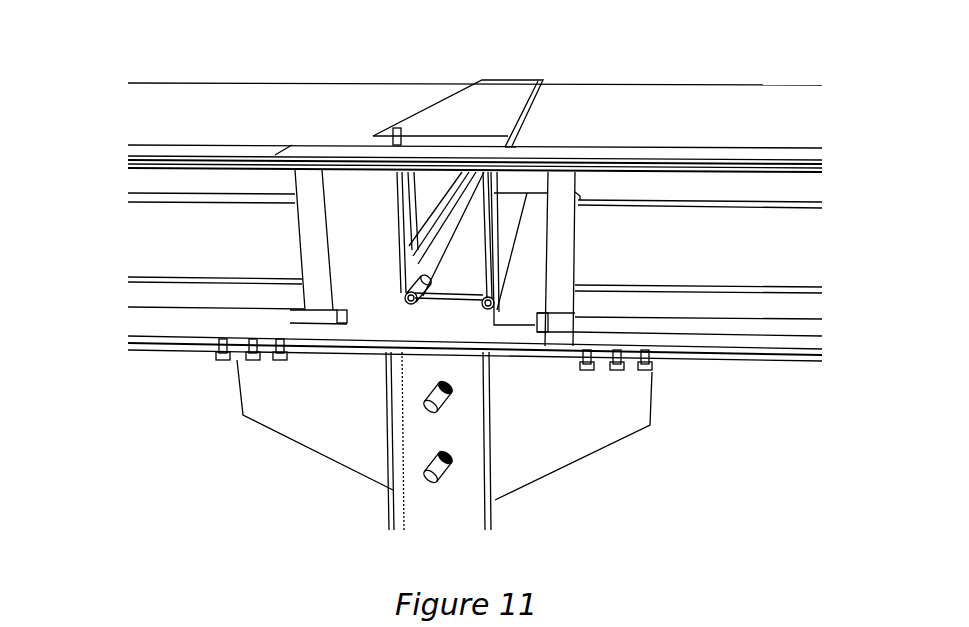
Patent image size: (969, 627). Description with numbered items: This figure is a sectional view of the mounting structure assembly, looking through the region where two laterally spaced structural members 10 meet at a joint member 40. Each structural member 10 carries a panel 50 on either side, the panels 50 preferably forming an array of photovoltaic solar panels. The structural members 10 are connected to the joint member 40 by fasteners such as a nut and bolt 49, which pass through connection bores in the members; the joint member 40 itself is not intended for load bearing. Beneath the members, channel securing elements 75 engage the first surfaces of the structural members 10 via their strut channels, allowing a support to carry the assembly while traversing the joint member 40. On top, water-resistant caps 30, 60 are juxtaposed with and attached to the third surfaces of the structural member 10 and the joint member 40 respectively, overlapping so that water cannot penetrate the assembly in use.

The structural member 10 is at (190, 247).
The water-resistant cap 30 is at (492, 110).
The joint member 40 is at (397, 185).
The nut and bolt 49 is at (406, 300).
The panel 50 is at (263, 127).
The water-resistant cap 60 is at (397, 142).
The channel securing element 75 is at (653, 365).